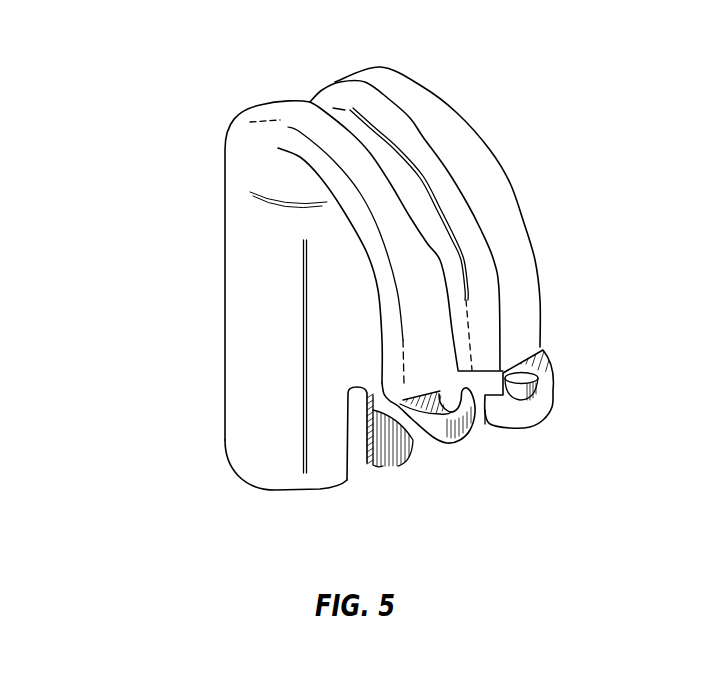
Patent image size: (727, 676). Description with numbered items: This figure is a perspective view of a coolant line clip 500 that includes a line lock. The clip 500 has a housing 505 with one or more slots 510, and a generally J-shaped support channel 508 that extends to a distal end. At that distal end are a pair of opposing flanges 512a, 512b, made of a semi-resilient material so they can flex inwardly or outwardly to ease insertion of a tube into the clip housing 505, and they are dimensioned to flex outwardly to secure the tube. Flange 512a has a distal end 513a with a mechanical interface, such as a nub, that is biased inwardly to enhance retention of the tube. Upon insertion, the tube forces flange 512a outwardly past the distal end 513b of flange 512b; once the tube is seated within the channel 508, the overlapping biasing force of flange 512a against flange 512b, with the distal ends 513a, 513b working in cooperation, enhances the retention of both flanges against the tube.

The clip 500 is at (160, 81).
The housing 505 is at (210, 333).
The support channel 508 is at (424, 176).
The slot 510 is at (357, 467).
The flange 512a is at (450, 420).
The flange 512b is at (544, 399).
The distal end 513a is at (467, 388).
The distal end 513b is at (497, 421).